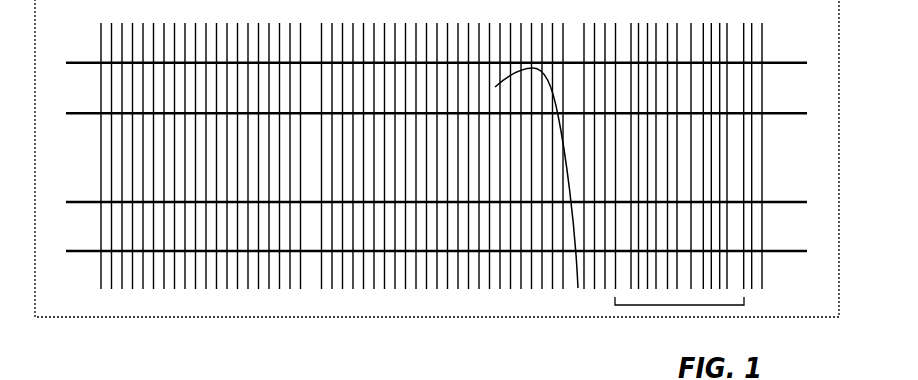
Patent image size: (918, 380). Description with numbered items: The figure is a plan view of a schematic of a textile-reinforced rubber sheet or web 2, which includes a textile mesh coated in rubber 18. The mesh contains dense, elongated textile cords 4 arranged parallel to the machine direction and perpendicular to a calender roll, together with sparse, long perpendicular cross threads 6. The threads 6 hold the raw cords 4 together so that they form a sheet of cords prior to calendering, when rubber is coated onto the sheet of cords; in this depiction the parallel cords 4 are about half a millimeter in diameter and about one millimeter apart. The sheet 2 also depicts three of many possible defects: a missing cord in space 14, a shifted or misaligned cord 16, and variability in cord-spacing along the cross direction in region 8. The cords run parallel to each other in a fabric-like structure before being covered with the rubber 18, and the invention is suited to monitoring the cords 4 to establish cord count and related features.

The sheet or web of textile-reinforced rubber 2 is at (449, 184).
The textile cords 4 is at (482, 196).
The cross threads 6 is at (770, 62).
The region of variable cord-spacing 8 is at (648, 305).
The space with missing cord 14 is at (313, 289).
The shifted or misaligned cord 16 is at (576, 269).
The rubber 18 is at (53, 169).